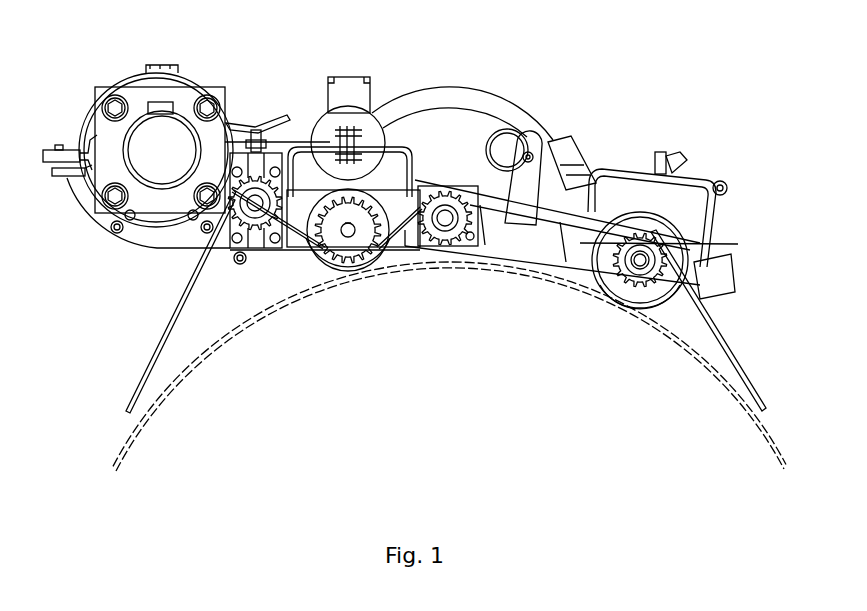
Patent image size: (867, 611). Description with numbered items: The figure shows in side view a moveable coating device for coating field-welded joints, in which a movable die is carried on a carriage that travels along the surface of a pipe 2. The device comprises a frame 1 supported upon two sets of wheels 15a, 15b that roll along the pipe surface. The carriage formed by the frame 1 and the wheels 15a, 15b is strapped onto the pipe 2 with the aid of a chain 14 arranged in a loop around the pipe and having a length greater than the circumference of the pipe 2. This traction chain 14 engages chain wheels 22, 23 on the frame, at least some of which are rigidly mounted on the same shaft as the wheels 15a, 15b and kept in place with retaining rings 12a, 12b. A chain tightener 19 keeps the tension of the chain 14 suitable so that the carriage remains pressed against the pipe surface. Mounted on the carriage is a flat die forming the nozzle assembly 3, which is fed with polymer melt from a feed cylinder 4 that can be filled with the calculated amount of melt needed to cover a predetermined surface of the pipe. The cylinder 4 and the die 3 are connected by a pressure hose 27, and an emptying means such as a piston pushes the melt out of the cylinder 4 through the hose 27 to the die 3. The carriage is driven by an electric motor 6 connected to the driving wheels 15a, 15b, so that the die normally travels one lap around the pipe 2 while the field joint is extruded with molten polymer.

The frame 1 is at (715, 268).
The pipe 2 is at (760, 428).
The nozzle assembly 3 is at (588, 160).
The feed cylinder 4 is at (210, 82).
The motor 6 is at (332, 128).
The retaining ring for shaft 12a is at (450, 252).
The retaining ring for shaft 12b is at (627, 306).
The chain 14 is at (708, 313).
The wheel 15a is at (738, 244).
The wheel 15b is at (313, 262).
The chain tightener 19 is at (225, 198).
The chain wheel 22 is at (660, 240).
The chain wheel 23 is at (333, 245).
The pressure hose 27 is at (458, 92).